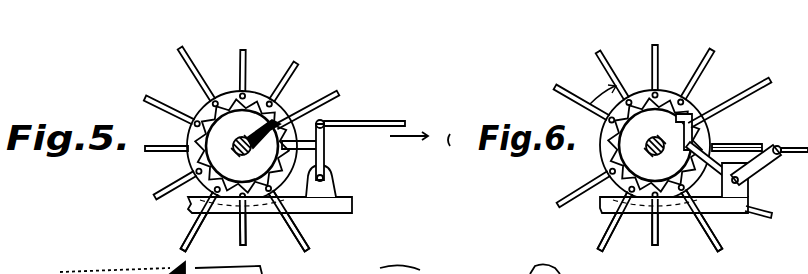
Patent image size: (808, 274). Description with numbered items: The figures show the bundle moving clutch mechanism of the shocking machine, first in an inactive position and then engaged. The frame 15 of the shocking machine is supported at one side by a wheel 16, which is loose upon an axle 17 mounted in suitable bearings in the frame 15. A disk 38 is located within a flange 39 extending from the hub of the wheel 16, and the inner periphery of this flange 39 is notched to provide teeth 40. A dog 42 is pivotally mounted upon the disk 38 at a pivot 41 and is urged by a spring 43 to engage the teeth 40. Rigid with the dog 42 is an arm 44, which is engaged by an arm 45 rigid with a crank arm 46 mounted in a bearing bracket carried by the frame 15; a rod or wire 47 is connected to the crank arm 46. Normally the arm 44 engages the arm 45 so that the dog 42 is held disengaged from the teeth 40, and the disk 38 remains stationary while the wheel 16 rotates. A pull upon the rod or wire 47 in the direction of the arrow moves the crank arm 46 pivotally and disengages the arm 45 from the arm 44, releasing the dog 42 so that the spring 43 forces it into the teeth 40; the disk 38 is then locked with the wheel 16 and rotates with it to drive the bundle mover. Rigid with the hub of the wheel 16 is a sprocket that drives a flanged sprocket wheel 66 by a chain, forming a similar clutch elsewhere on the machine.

In FIG. 5, the frame 15 is at (330, 214).
In FIG. 6, the frame 15 is at (733, 214).
In FIG. 5, the wheel 16 is at (279, 78).
In FIG. 6, the wheel 16 is at (562, 92).
In FIG. 5, the axle 17 is at (200, 110).
In FIG. 5, the disk 38 is at (215, 160).
In FIG. 6, the disk 38 is at (612, 182).
In FIG. 5, the flange 39 is at (268, 101).
In FIG. 6, the flange 39 is at (716, 100).
In FIG. 5, the teeth 40 is at (182, 170).
In FIG. 6, the teeth 40 is at (606, 168).
In FIG. 5, the pivot 41 is at (244, 158).
In FIG. 6, the pivot 41 is at (665, 158).
In FIG. 5, the dog 42 is at (290, 112).
In FIG. 6, the dog 42 is at (700, 116).
In FIG. 5, the spring 43 is at (240, 125).
In FIG. 6, the spring 43 is at (672, 112).
In FIG. 5, the arm 44 is at (336, 108).
In FIG. 6, the arm 44 is at (712, 140).
In FIG. 5, the arm 45 is at (327, 152).
In FIG. 6, the arm 45 is at (766, 147).
In FIG. 5, the crank arm 46 is at (338, 122).
In FIG. 6, the crank arm 46 is at (764, 162).
In FIG. 5, the rod or wire 47 is at (324, 147).
In FIG. 6, the rod or wire 47 is at (691, 134).
In FIG. 5, the sprocket wheel 66 is at (178, 134).
In FIG. 6, the sprocket wheel 66 is at (640, 98).